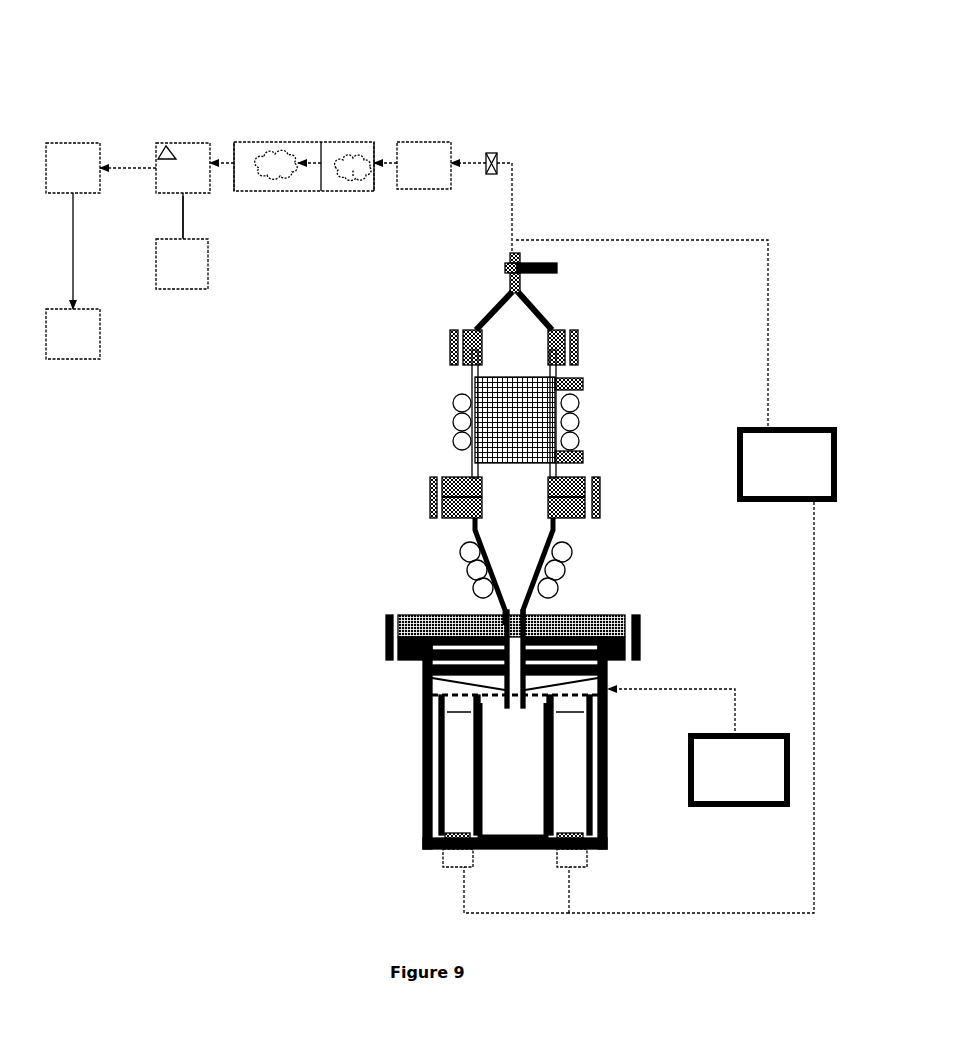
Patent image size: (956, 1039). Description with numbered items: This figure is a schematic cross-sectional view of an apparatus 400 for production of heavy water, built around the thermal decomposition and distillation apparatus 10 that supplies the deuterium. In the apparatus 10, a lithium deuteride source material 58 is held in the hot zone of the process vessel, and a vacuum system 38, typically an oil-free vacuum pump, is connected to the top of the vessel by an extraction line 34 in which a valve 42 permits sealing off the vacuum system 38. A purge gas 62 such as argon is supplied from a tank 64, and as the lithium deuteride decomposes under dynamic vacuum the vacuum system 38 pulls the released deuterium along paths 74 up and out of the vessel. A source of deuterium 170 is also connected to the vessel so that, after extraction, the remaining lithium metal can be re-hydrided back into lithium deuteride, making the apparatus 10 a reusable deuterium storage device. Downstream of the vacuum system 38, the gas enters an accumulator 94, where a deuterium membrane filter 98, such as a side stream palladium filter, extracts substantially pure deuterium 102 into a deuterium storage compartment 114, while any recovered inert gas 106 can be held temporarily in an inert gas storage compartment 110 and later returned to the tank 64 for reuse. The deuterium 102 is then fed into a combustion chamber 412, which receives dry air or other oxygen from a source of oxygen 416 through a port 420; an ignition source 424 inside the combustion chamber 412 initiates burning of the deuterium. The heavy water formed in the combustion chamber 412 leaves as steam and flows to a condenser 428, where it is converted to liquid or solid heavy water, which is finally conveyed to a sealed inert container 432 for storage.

The thermal decomposition and distillation apparatus 10 is at (632, 149).
The extraction line 34 is at (515, 223).
The vacuum system 38 is at (428, 142).
The valve 42 is at (495, 152).
The lithium deuteride source material 58 is at (464, 786).
The purge gas 62 is at (777, 475).
The tank 64 is at (775, 427).
The paths 74 is at (513, 770).
The accumulator 94 is at (297, 199).
The deuterium membrane filter 98 is at (333, 148).
The deuterium 102 is at (273, 150).
The recovered inert gas 106 is at (353, 176).
The inert gas storage compartment 110 is at (343, 192).
The deuterium storage compartment 114 is at (243, 143).
The source of deuterium 170 is at (746, 781).
The apparatus for production of heavy water 400 is at (218, 94).
The combustion chamber 412 is at (205, 143).
The source of oxygen 416 is at (208, 266).
The port 420 is at (183, 195).
The ignition source 424 is at (158, 152).
The condenser 428 is at (90, 143).
The sealed inert container 432 is at (100, 347).